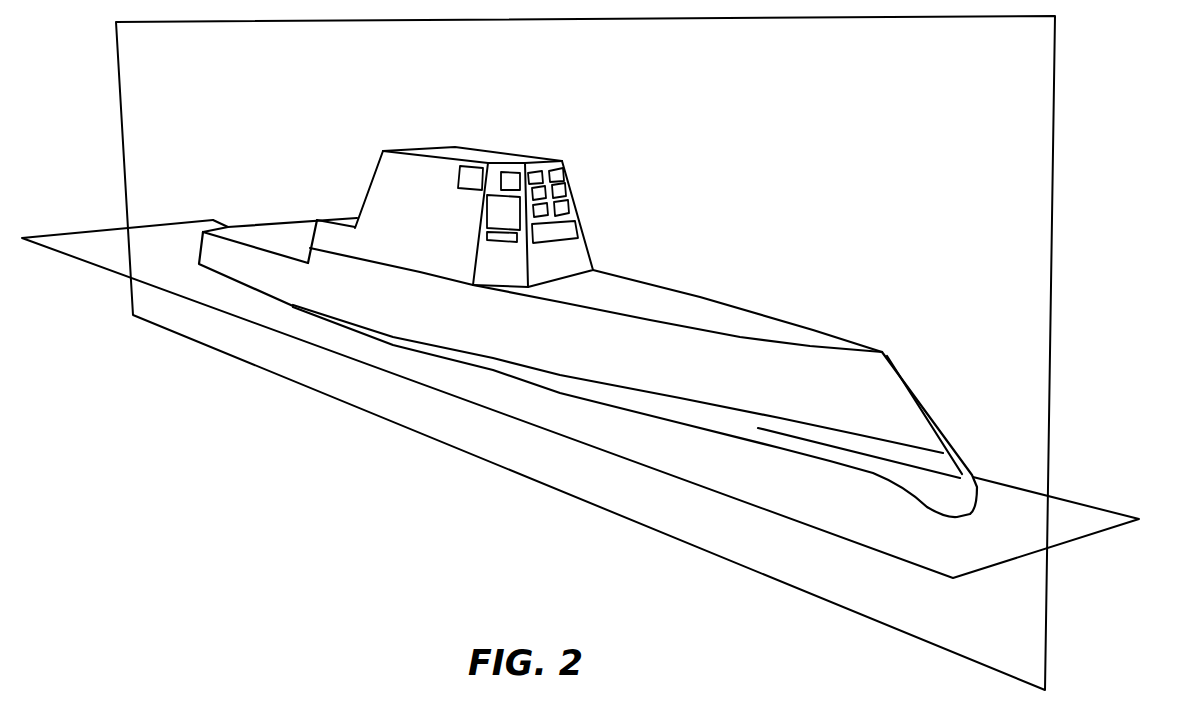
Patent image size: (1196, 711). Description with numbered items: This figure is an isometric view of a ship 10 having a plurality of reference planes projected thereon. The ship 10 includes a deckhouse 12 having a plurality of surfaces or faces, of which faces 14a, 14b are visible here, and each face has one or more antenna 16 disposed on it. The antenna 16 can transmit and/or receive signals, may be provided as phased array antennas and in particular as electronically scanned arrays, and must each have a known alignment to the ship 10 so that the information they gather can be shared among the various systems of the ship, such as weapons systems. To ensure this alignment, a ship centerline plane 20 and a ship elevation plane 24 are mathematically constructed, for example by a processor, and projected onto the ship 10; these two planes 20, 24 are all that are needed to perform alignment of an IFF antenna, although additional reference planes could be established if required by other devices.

The ship 10 is at (1119, 346).
The deckhouse 12 is at (477, 247).
The face of the deckhouse 14a is at (438, 253).
The face of the deckhouse 14b is at (497, 275).
The antenna 16 is at (510, 182).
The ship centerline plane 20 is at (1055, 121).
The ship elevation plane 24 is at (1083, 517).